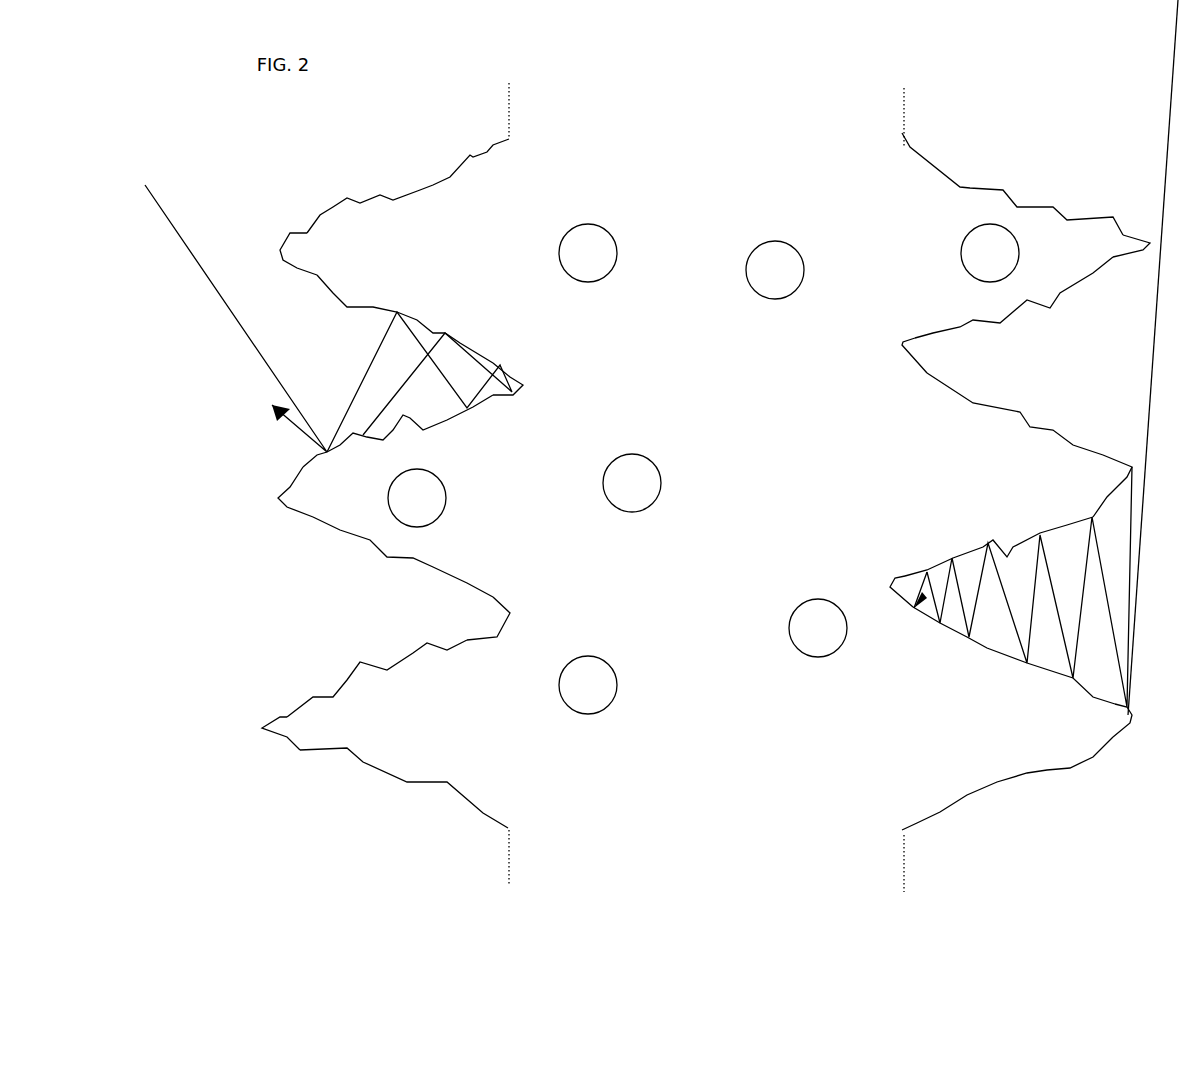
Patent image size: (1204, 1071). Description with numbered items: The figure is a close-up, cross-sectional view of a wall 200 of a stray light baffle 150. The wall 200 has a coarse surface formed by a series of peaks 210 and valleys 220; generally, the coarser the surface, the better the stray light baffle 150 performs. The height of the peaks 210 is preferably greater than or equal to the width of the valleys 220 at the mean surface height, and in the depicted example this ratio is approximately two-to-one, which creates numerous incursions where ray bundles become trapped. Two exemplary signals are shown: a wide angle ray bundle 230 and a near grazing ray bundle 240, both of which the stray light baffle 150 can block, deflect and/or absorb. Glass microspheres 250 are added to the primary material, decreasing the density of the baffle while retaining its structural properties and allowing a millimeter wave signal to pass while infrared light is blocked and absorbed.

The wall 200 is at (361, 134).
The stray light baffle 150 is at (470, 157).
The peaks 210 is at (280, 252).
The valleys 220 is at (523, 386).
The ray bundle 230 is at (173, 213).
The ray bundle 240 is at (1168, 140).
The glass microspheres 250 is at (660, 493).